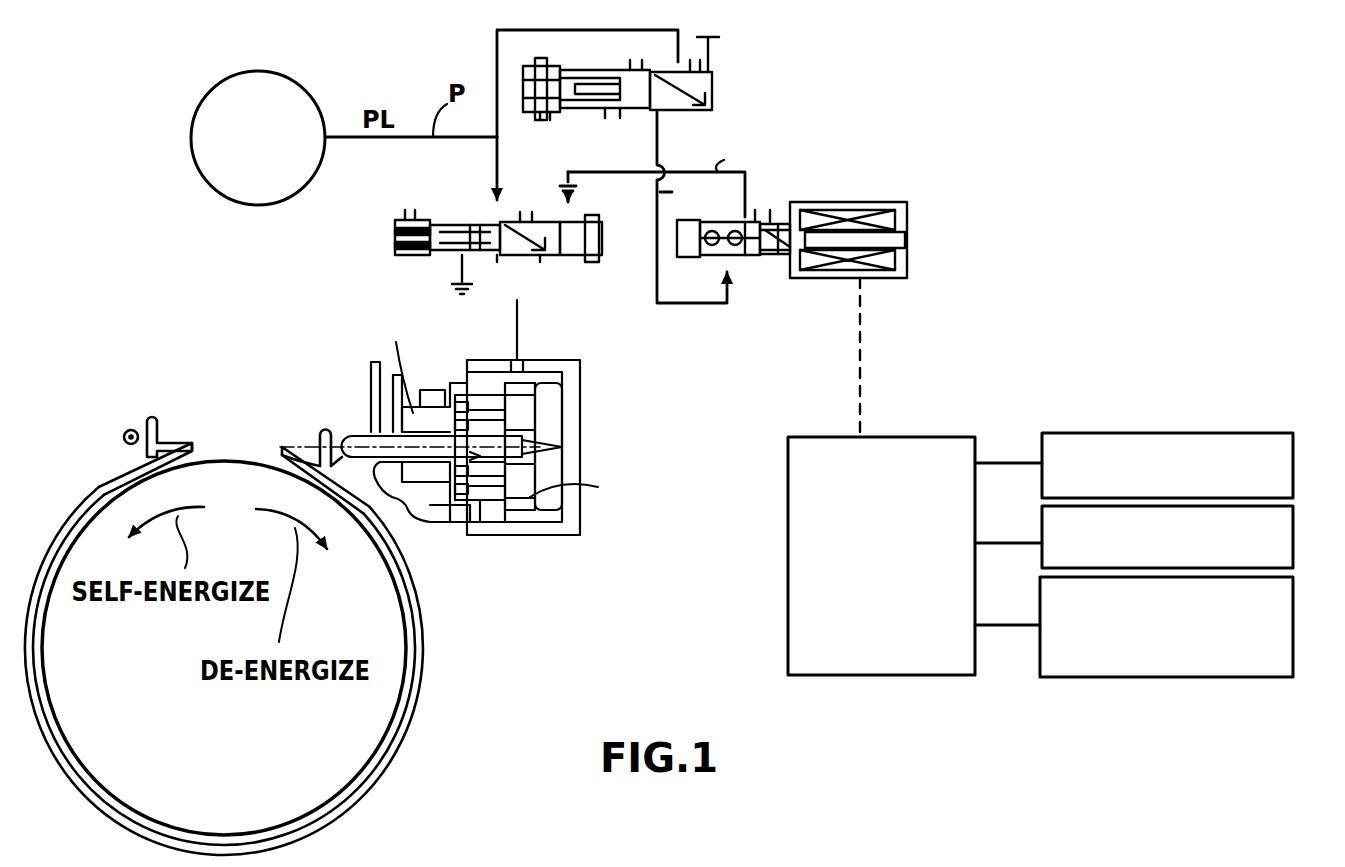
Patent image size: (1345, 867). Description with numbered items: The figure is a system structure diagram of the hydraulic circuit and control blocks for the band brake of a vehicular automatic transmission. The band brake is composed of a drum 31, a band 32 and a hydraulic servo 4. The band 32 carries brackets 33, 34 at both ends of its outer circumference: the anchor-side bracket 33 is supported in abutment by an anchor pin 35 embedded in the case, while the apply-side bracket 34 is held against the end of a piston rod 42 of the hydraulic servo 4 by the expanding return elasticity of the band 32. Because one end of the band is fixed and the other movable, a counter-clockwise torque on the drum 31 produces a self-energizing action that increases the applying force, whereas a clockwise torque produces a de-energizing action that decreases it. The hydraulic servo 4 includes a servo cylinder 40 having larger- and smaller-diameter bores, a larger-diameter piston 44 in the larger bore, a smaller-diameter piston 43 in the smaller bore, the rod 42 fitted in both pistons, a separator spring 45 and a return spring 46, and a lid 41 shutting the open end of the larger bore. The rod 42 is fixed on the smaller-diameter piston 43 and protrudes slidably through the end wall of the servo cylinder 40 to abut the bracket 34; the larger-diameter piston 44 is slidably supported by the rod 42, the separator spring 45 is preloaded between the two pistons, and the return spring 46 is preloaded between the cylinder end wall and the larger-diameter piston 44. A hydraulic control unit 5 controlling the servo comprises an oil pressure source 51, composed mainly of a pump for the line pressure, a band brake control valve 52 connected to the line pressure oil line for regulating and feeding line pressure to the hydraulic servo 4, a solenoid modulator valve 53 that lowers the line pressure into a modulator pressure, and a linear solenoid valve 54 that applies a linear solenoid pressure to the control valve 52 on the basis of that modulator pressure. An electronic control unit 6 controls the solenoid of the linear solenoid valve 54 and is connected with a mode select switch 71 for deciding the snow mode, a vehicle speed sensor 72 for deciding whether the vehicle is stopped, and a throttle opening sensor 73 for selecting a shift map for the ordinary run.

The hydraulic servo 4 is at (593, 412).
The hydraulic control unit 5 is at (849, 112).
The electronic control unit 6 is at (935, 437).
The drum 31 is at (391, 586).
The band 32 is at (427, 601).
The bracket 33 is at (160, 426).
The bracket 34 is at (323, 432).
The anchor pin 35 is at (123, 437).
The servo cylinder 40 is at (560, 535).
The lid 41 is at (583, 400).
The piston rod 42 is at (358, 432).
The smaller-diameter piston 43 is at (457, 490).
The larger-diameter piston 44 is at (517, 358).
The separator spring 45 is at (483, 398).
The return spring 46 is at (497, 524).
The oil pressure source 51 is at (321, 96).
The B-3 control valve 52 is at (385, 242).
The solenoid modulator valve 53 is at (727, 93).
The linear solenoid valve 54 is at (925, 229).
The mode select switch 71 is at (1293, 458).
The vehicle speed sensor 72 is at (1293, 538).
The throttle opening sensor 73 is at (1293, 620).